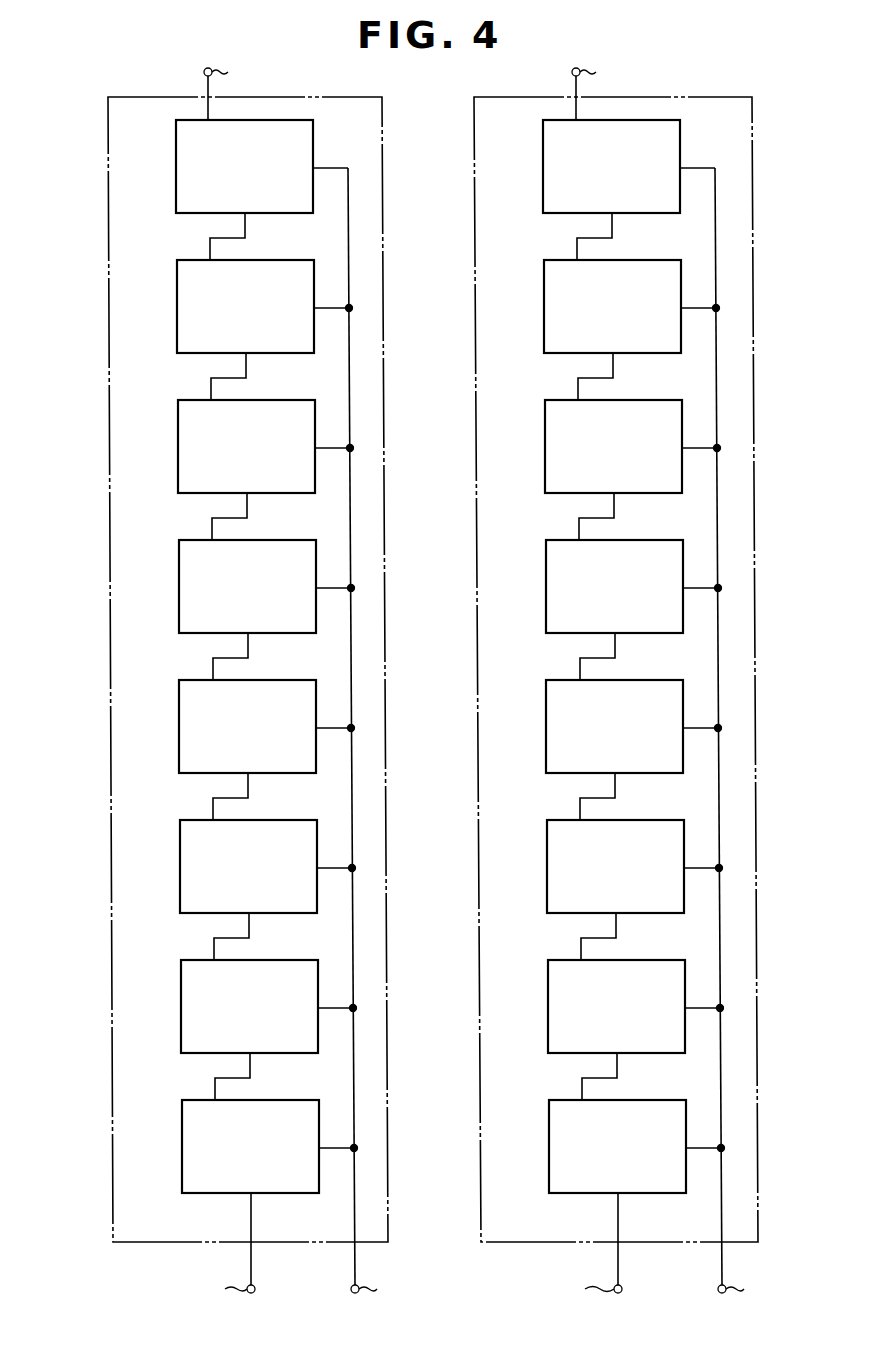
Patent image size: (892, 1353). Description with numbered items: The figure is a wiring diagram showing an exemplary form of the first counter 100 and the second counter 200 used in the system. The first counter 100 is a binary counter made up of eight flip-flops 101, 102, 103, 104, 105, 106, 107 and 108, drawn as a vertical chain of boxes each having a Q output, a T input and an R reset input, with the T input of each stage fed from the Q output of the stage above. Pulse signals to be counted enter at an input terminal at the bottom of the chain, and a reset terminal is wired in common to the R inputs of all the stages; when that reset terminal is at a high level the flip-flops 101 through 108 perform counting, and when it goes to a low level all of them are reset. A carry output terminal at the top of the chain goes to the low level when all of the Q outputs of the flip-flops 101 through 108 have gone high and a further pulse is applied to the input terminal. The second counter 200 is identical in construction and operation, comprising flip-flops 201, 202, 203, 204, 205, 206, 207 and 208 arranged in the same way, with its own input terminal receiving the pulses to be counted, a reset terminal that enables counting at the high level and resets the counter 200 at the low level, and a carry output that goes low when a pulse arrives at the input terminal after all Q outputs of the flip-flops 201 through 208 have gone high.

The first counter 100 is at (108, 230).
The flip-flop 101 is at (182, 1183).
The flip-flop 102 is at (181, 1043).
The flip-flop 103 is at (180, 903).
The flip-flop 104 is at (179, 763).
The flip-flop 105 is at (179, 623).
The flip-flop 106 is at (178, 483).
The flip-flop 107 is at (177, 343).
The flip-flop 108 is at (176, 203).
The second counter 200 is at (752, 245).
The flip-flop 201 is at (549, 1183).
The flip-flop 202 is at (548, 1043).
The flip-flop 203 is at (547, 903).
The flip-flop 204 is at (546, 763).
The flip-flop 205 is at (546, 623).
The flip-flop 206 is at (545, 483).
The flip-flop 207 is at (544, 343).
The flip-flop 208 is at (543, 203).